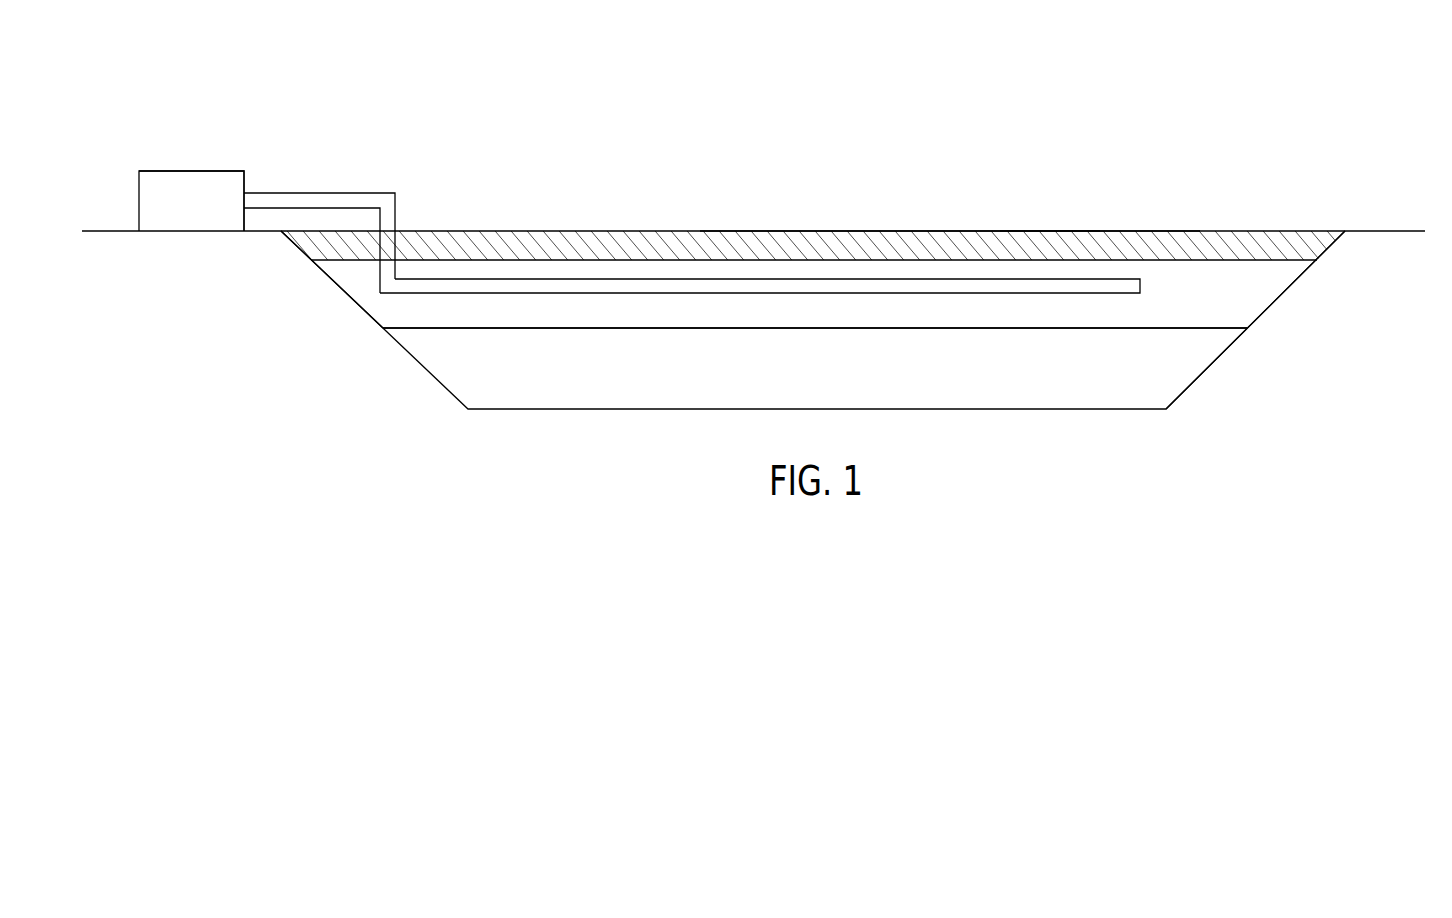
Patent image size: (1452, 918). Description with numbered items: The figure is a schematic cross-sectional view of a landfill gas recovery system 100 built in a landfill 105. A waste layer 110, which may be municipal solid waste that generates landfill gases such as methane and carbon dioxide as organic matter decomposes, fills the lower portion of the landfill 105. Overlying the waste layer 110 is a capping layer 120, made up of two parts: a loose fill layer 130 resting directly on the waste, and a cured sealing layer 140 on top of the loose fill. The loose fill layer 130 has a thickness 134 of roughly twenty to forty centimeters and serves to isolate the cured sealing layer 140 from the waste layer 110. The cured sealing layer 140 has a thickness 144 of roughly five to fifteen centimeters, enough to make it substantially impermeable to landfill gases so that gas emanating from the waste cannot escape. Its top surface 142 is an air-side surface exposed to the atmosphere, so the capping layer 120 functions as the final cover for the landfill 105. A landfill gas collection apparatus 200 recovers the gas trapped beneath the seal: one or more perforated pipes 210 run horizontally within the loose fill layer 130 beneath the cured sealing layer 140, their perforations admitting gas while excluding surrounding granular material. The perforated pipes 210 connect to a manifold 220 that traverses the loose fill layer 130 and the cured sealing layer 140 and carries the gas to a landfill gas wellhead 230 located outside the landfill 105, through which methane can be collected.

The landfill gas recovery system 100 is at (1256, 126).
The landfill 105 is at (1388, 235).
The waste layer 110 is at (1200, 365).
The capping layer 120 is at (243, 233).
The loose fill layer 130 is at (1275, 294).
The thickness 134 is at (1193, 328).
The cured sealing layer 140 is at (1320, 248).
The top surface 142 is at (923, 231).
The thickness 144 is at (1108, 279).
The landfill gas collection apparatus 200 is at (356, 146).
The perforated pipes 210 is at (535, 285).
The manifold 220 is at (390, 265).
The landfill gas wellhead 230 is at (192, 171).